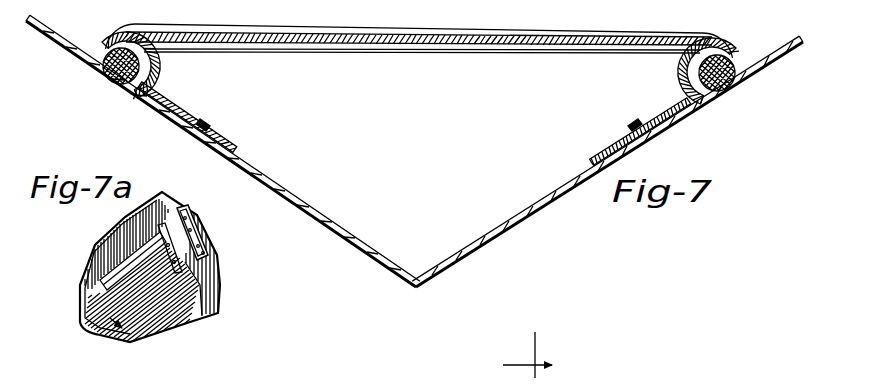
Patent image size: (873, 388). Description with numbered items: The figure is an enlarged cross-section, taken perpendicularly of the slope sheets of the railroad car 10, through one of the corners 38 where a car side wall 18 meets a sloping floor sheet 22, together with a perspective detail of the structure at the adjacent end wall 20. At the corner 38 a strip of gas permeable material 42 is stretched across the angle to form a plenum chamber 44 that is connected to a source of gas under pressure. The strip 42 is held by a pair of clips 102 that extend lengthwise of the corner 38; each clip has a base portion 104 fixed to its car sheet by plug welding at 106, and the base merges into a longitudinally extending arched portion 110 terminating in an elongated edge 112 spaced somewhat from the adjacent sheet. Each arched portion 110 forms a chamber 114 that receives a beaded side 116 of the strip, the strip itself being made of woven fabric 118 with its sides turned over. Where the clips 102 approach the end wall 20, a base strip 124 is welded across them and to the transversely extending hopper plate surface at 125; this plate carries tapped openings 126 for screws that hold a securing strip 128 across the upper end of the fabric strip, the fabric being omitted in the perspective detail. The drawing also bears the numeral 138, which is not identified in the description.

In FIG. 7, the railroad car 10 is at (527, 355).
In FIG. 7, the car side wall 18 is at (274, 184).
In FIG. 7A, the car side wall 18 is at (121, 230).
In FIG. 7, the car end wall 20 is at (489, 196).
In FIG. 7A, the car end wall 20 is at (213, 273).
In FIG. 7, the sloping floor sheet 22 is at (551, 198).
In FIG. 7A, the sloping floor sheet 22 is at (188, 315).
In FIG. 7A, the corner 38 is at (97, 308).
In FIG. 7, the gas permeable material strip 42 is at (274, 46).
In FIG. 7, the plenum chamber 44 is at (334, 200).
In FIG. 7, the clip 102 is at (210, 118).
In FIG. 7A, the clip 102 is at (104, 260).
In FIG. 7, the base portion 104 is at (235, 152).
In FIG. 7, the plug weld 106 is at (203, 124).
In FIG. 7, the arched portion 110 is at (157, 72).
In FIG. 7, the edge 112 is at (106, 55).
In FIG. 7, the chamber 114 is at (135, 98).
In FIG. 7, the beaded side 116 is at (99, 88).
In FIG. 7, the woven fabric 118 is at (573, 50).
In FIG. 7, the base strip 124 is at (405, 49).
In FIG. 7A, the base strip 124 is at (175, 204).
In FIG. 7A, the weld 125 is at (183, 261).
In FIG. 7A, the tapped opening 126 is at (201, 281).
In FIG. 7, the securing strip 128 is at (338, 33).
In FIG. 7A, the securing strip 128 is at (197, 241).
In FIG. 7, the lower element 138 is at (254, 378).